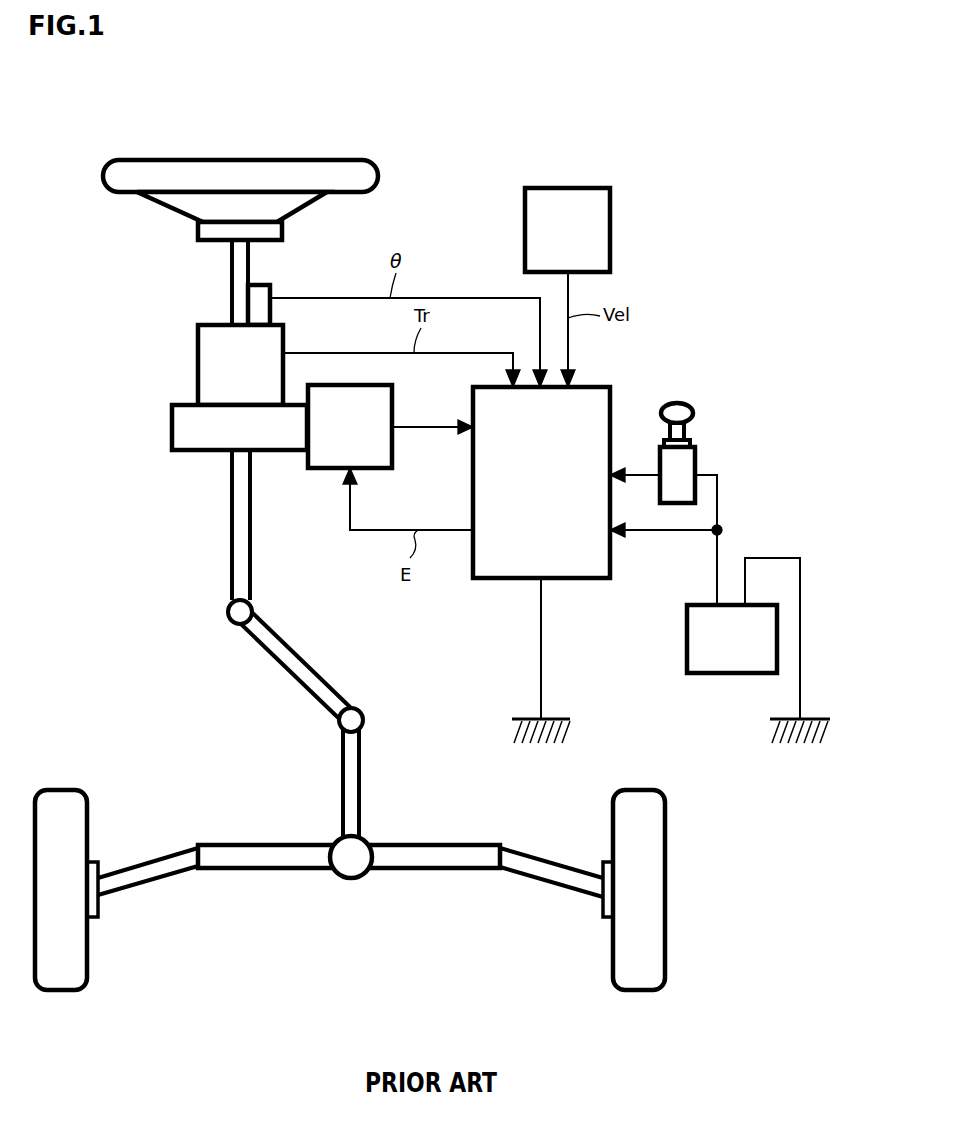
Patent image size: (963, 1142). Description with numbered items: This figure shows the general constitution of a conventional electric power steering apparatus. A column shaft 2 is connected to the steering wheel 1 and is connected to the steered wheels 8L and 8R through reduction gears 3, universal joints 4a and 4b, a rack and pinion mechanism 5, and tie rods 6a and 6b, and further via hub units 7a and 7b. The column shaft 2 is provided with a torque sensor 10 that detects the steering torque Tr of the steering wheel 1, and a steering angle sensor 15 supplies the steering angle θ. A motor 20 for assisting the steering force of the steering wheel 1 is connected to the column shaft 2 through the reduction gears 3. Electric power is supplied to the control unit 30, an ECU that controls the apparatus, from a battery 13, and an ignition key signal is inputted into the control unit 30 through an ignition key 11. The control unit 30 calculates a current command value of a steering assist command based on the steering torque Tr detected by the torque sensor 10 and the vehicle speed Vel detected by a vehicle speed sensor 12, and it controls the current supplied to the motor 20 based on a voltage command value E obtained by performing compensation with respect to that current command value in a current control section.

The steering wheel 1 is at (378, 167).
The column shaft 2 is at (232, 286).
The reduction gears 3 is at (172, 438).
The universal joint 4a is at (228, 620).
The universal joint 4b is at (339, 727).
The rack and pinion mechanism 5 is at (365, 840).
The tie rod 6a is at (130, 868).
The tie rod 6b is at (532, 858).
The hub unit 7a is at (98, 915).
The hub unit 7b is at (603, 915).
The steered wheel 8L is at (87, 975).
The steered wheel 8R is at (613, 975).
The torque sensor 10 is at (198, 356).
The ignition key 11 is at (697, 414).
The vehicle speed sensor 12 is at (610, 198).
The battery 13 is at (687, 633).
The steering angle sensor 15 is at (271, 312).
The motor 20 is at (392, 397).
The control unit 30 is at (610, 395).